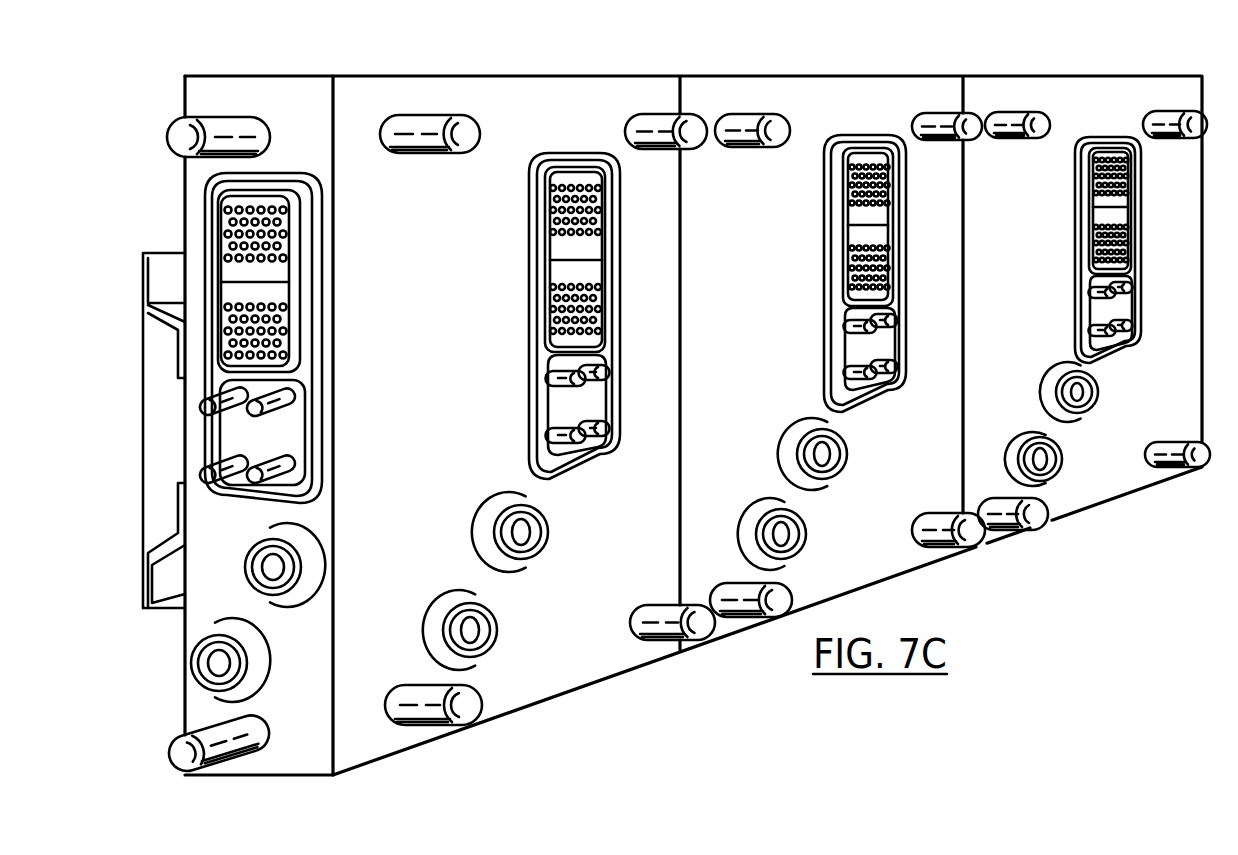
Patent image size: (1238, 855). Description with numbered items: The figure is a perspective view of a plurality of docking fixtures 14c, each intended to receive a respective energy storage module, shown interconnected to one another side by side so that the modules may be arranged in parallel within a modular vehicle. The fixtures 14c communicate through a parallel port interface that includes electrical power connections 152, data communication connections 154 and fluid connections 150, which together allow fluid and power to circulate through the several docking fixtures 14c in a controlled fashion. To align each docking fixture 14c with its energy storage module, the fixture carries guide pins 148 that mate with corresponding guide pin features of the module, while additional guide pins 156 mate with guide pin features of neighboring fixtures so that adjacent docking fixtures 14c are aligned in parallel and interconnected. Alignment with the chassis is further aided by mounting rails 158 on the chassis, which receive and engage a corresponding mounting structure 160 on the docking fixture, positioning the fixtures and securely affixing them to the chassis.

The docking fixture 14c is at (516, 96).
The guide pin 148 is at (747, 126).
The fluid connection 150 is at (275, 634).
The electrical power connection 152 is at (232, 428).
The data communication connection 154 is at (297, 172).
The guide pin 156 is at (178, 143).
The mounting rail 158 is at (165, 590).
The mounting structure 160 is at (165, 477).